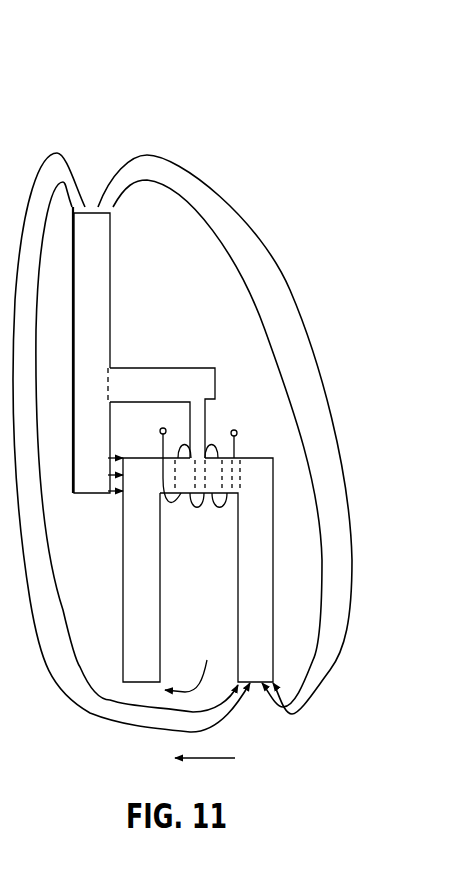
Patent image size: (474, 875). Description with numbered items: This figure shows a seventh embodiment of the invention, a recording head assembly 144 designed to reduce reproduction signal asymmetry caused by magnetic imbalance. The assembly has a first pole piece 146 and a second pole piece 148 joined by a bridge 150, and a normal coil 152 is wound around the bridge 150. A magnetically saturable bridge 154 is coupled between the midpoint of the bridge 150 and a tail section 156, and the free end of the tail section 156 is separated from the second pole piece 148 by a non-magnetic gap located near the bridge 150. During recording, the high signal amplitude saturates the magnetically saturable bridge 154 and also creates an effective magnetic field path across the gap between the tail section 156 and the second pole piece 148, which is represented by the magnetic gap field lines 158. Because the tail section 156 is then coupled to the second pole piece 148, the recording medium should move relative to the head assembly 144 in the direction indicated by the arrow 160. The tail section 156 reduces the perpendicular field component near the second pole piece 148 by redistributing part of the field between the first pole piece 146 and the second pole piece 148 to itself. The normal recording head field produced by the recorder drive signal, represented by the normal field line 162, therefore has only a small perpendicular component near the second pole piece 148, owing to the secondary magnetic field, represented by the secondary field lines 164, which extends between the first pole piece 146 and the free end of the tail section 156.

The recording head assembly 144 is at (212, 136).
The first pole piece 146 is at (263, 568).
The second pole piece 148 is at (123, 567).
The bridge 150 is at (192, 512).
The normal coil 152 is at (237, 433).
The magnetically saturable bridge 154 is at (148, 367).
The tail section 156 is at (110, 283).
The magnetic gap field lines 158 is at (107, 460).
The arrow 160 is at (220, 759).
The normal field line 162 is at (192, 664).
The secondary field lines 164 is at (82, 677).